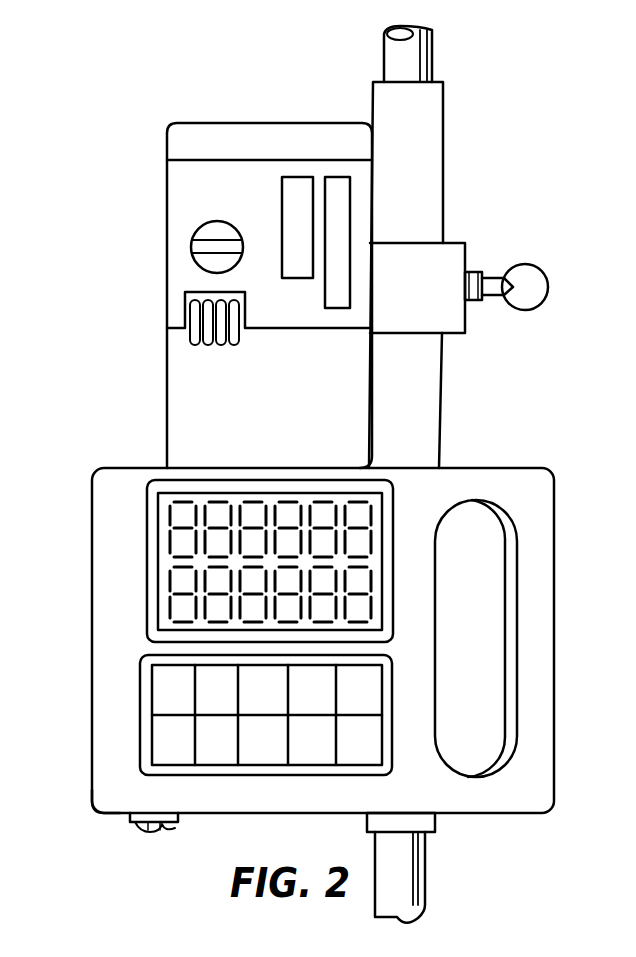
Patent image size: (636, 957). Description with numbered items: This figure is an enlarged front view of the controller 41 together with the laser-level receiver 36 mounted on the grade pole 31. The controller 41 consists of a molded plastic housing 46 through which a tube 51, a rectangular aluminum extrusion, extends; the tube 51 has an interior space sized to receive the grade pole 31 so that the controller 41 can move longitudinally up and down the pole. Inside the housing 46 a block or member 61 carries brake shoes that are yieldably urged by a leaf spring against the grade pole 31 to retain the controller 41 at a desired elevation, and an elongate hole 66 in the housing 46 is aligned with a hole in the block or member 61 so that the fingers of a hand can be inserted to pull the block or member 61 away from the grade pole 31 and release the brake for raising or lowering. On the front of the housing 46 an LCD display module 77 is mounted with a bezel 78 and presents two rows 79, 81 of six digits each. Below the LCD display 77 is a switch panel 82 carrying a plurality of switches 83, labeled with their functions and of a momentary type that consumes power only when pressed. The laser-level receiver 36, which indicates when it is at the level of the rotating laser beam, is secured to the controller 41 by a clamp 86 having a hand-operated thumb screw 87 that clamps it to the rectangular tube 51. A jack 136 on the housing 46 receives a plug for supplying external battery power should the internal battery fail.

The grade pole 31 is at (415, 53).
The laser-level receiver 36 is at (165, 278).
The controller 41 is at (86, 594).
The housing 46 is at (88, 820).
The tube 51 is at (435, 162).
The block or member 61 is at (500, 575).
The hole 66 is at (513, 637).
The LCD display module 77 is at (168, 553).
The bezel 78 is at (147, 523).
The row of digits 79 is at (172, 518).
The row of digits 81 is at (172, 610).
The switch panel 82 is at (134, 751).
The switches 83 is at (157, 682).
The clamp 86 is at (455, 248).
The thumb screw 87 is at (525, 268).
The jack 136 is at (148, 832).